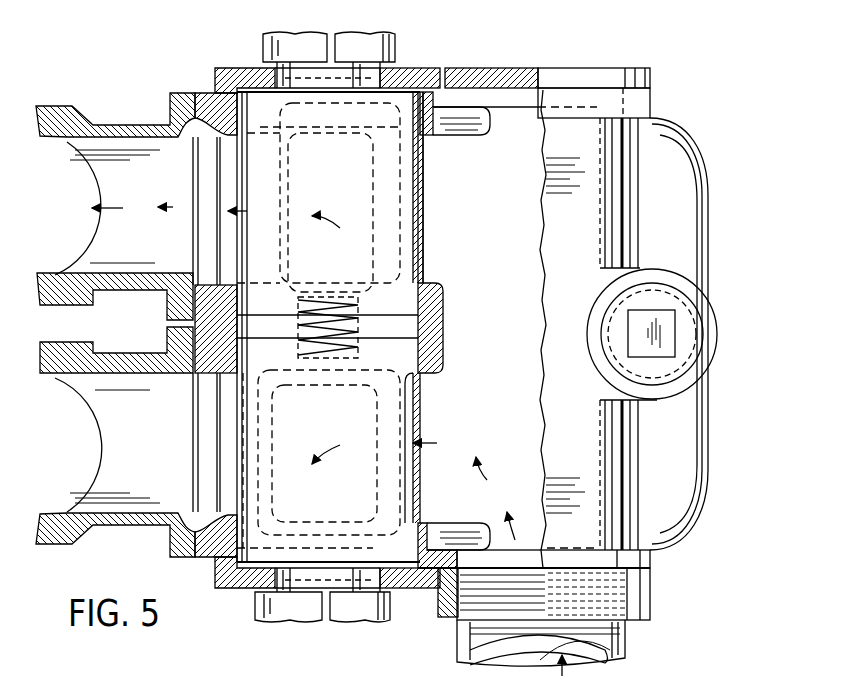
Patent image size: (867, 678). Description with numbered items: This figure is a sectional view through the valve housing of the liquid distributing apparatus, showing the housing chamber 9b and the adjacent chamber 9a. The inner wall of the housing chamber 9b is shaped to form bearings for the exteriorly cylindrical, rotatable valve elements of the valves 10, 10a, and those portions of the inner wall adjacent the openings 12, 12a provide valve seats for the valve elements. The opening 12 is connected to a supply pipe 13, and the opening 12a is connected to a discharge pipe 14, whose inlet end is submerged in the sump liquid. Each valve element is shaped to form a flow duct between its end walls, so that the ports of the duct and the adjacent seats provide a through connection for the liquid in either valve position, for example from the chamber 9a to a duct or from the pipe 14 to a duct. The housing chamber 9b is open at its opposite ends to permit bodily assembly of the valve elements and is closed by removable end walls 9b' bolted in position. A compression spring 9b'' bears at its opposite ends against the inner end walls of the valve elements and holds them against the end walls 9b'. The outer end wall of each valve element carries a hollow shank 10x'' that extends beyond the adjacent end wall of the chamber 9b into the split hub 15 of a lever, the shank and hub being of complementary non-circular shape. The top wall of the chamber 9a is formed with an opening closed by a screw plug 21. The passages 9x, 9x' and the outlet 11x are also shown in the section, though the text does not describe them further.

The chamber 9a is at (530, 442).
The housing chamber 9b is at (197, 324).
The removable end wall 9b' is at (366, 326).
The compression spring 9b'' is at (370, 346).
The passage 9x is at (507, 330).
The pipe connection 9x' is at (566, 594).
The valve 10 is at (395, 415).
The valve 10a is at (424, 238).
The hollow shank 10x'' is at (328, 332).
The outlet pipe 11x is at (627, 650).
The opening 12 is at (204, 296).
The opening 12a is at (200, 522).
The supply pipe 13 is at (63, 305).
The discharge pipe 14 is at (70, 345).
The split hub 15 is at (352, 42).
The screw plug 21 is at (650, 373).